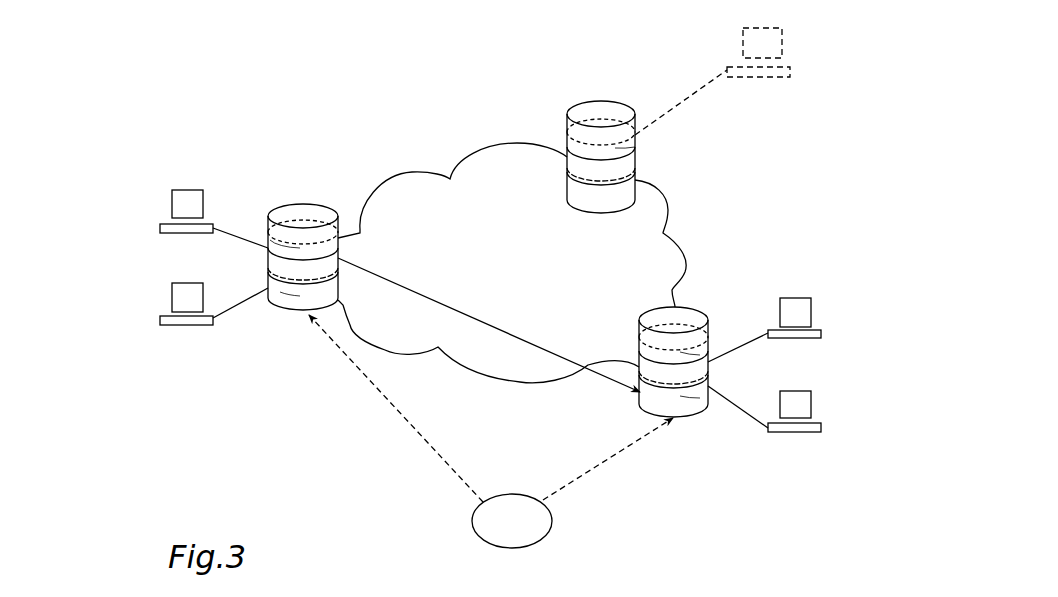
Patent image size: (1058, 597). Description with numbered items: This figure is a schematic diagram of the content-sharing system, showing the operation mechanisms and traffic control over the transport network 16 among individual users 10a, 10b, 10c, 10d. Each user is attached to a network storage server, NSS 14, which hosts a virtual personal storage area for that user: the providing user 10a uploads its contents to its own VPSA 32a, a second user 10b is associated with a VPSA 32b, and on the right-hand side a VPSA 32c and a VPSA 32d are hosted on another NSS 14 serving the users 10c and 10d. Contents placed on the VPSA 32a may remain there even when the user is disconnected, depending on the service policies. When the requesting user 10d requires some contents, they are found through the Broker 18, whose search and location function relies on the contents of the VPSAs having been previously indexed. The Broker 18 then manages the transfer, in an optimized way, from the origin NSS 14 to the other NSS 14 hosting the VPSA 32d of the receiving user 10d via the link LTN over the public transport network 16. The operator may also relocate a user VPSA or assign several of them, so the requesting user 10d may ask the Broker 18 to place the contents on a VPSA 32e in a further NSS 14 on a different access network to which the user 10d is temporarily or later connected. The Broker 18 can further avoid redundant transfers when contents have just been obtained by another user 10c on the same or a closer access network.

The first user 10a is at (166, 197).
The user 10b is at (162, 298).
The user 10c is at (819, 309).
The requesting user 10d is at (820, 403).
The NSS 14 is at (307, 198).
The network cloud 16 is at (497, 167).
The Broker 18 is at (555, 543).
The VPSA 32a is at (283, 250).
The storage partition 32b is at (297, 293).
The storage partition 32c is at (697, 353).
The VPSA 32d is at (695, 395).
The VPSA 32e is at (640, 150).
The link LTN is at (493, 325).